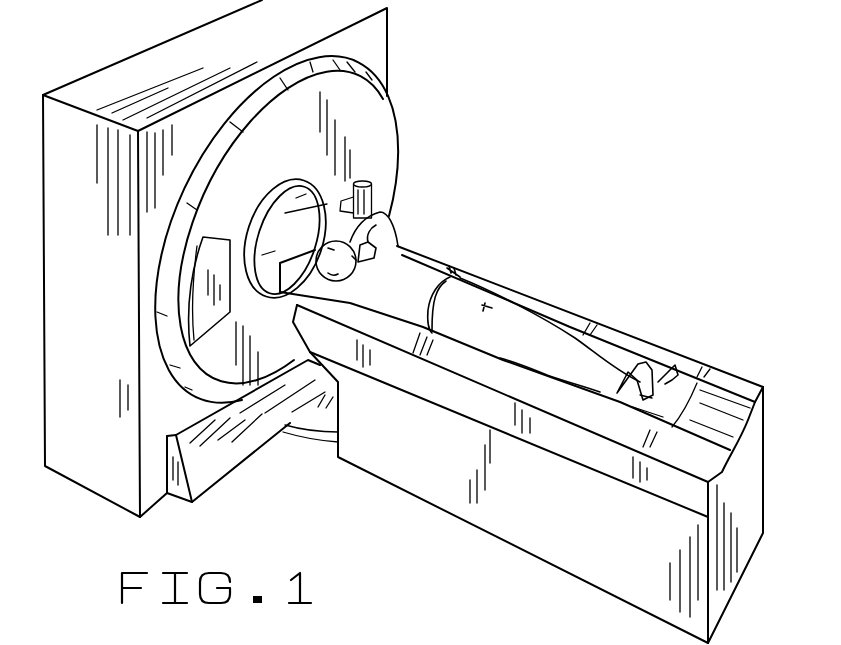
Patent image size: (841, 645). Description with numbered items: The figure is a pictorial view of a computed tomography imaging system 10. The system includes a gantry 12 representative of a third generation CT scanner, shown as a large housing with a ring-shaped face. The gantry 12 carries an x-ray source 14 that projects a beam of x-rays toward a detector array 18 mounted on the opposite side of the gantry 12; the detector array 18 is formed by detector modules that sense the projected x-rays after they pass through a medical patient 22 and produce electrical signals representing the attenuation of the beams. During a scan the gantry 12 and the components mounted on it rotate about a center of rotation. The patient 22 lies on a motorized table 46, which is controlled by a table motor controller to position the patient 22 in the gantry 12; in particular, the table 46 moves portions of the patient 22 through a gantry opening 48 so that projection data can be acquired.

The computed tomography (CT) imaging system 10 is at (314, 443).
The gantry 12 is at (72, 138).
The x-ray source 14 is at (373, 199).
The detector array 18 is at (210, 312).
The medical patient 22 is at (408, 277).
The motorized table 46 is at (415, 458).
The gantry opening 48 is at (287, 220).